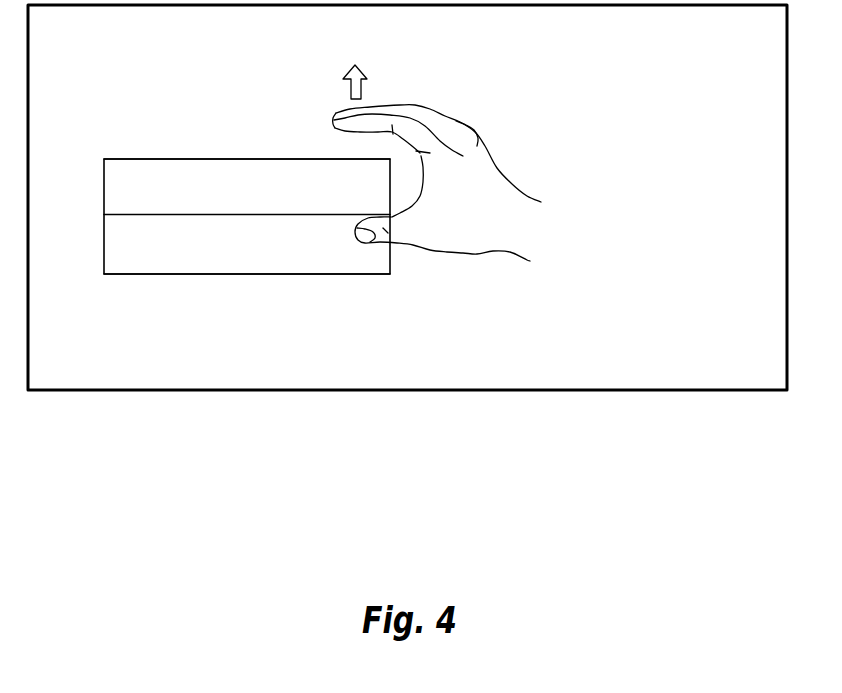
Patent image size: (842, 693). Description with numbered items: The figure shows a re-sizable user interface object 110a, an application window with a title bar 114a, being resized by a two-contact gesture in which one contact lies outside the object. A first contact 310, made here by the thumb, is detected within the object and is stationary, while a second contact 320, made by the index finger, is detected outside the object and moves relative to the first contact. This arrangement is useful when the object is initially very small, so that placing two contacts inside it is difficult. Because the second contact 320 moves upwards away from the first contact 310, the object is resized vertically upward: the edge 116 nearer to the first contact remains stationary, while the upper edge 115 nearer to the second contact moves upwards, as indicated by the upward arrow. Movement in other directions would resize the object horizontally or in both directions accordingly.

The user interface object 110a is at (133, 141).
The upper edge 115 is at (248, 158).
The title bar 114a is at (265, 198).
The edge 116 is at (175, 275).
The second contact 320 is at (360, 122).
The first contact 310 is at (385, 228).